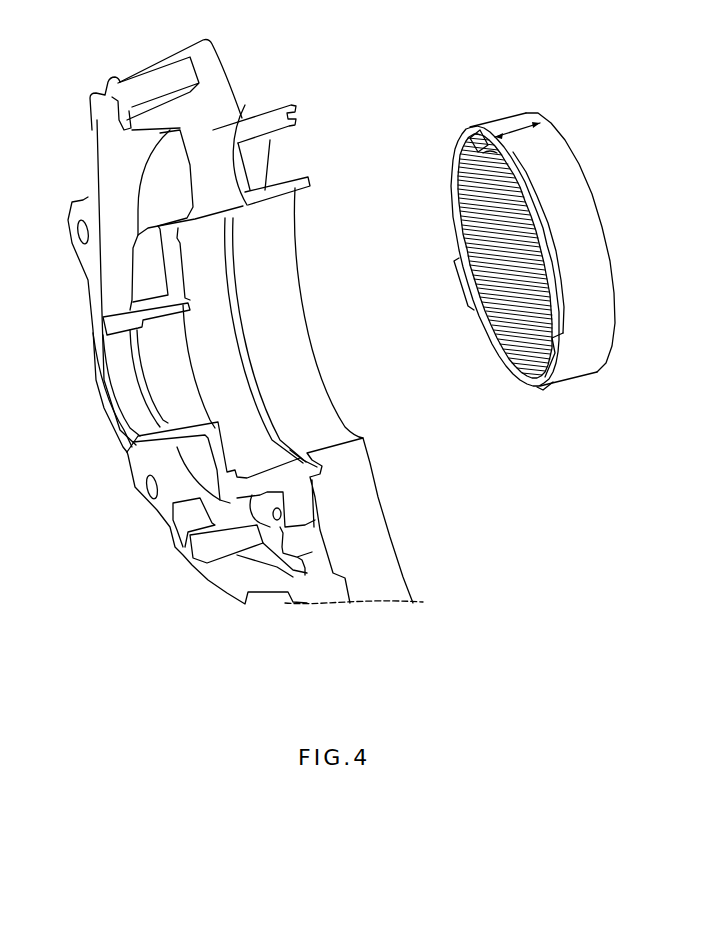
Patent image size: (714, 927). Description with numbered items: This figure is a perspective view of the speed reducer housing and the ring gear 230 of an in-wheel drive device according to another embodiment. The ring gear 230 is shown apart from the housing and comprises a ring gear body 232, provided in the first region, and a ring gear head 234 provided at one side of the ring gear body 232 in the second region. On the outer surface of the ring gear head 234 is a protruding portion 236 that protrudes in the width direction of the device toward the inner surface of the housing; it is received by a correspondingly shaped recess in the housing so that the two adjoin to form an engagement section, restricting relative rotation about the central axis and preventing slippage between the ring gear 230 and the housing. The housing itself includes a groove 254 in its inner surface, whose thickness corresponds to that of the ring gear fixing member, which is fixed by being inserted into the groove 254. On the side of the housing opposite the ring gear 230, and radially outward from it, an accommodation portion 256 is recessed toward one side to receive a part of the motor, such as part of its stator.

The ring gear 230 is at (548, 78).
The ring gear body 232 is at (513, 130).
The ring gear head 234 is at (480, 128).
The protruding portion 236 is at (458, 286).
The groove 254 is at (237, 108).
The accommodation portion 256 is at (140, 177).